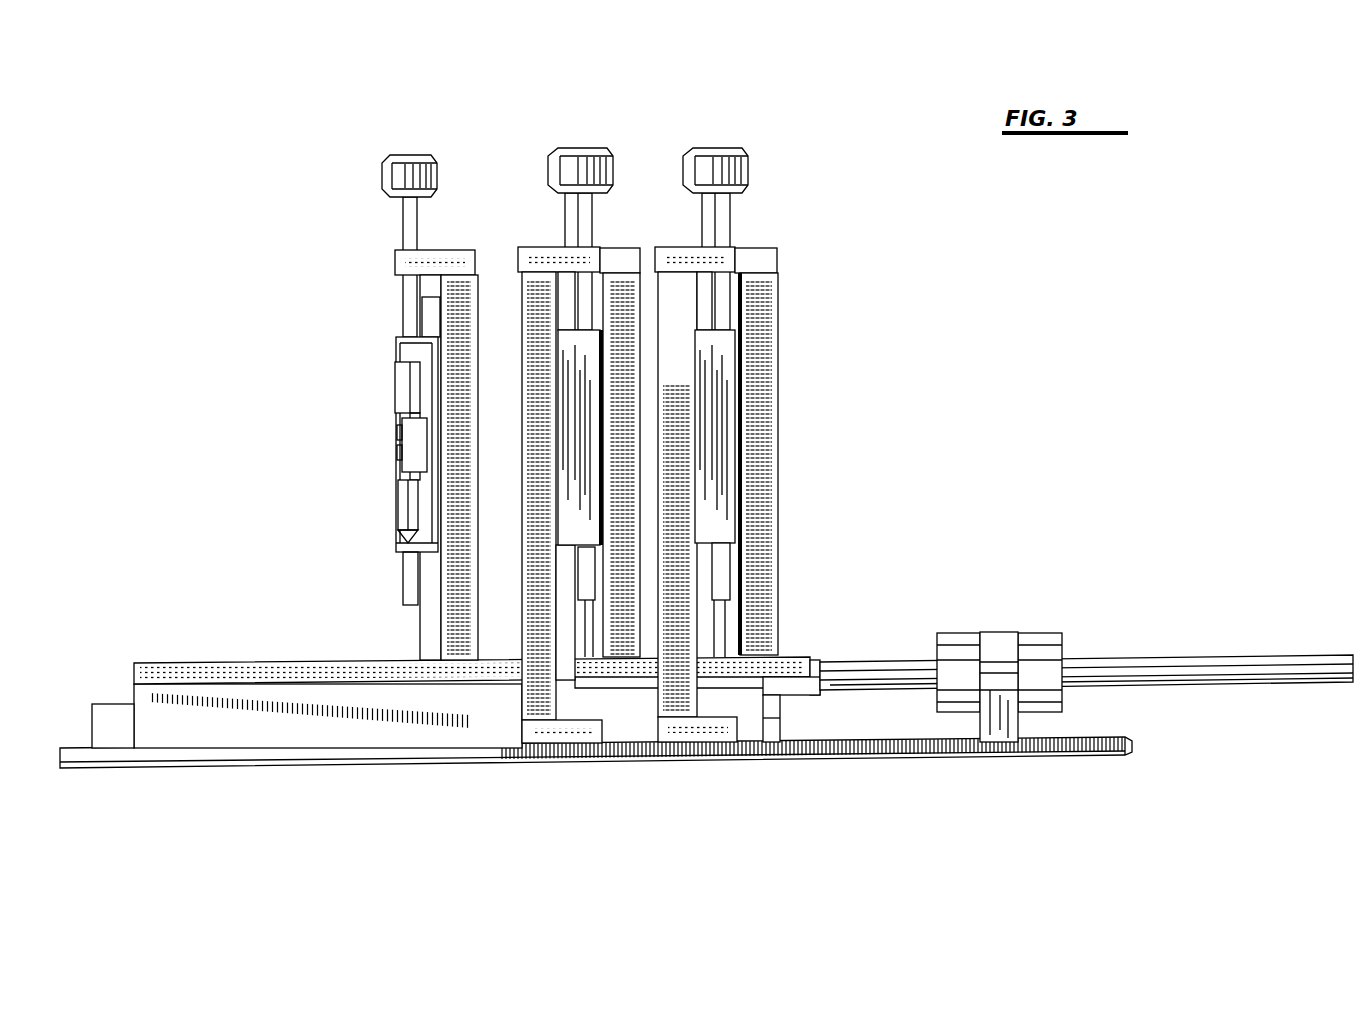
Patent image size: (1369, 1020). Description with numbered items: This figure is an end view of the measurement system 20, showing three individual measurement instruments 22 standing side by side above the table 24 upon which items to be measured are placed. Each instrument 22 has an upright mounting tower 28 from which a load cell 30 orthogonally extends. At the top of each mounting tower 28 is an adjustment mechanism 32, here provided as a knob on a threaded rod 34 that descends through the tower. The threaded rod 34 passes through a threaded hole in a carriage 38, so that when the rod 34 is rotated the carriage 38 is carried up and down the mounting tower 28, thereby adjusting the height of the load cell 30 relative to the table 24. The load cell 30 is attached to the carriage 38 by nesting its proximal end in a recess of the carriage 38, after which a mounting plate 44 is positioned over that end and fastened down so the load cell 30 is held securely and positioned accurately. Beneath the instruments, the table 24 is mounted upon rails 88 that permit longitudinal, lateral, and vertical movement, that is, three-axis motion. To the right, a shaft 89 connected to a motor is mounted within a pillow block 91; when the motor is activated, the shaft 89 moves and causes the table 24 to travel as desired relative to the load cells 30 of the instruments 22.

The measurement system 20 is at (950, 258).
The measurement instrument 22 is at (453, 240).
The table 24 is at (220, 665).
The mounting tower 28 is at (455, 322).
The load cell 30 is at (420, 393).
The adjustment mechanism 32 is at (410, 155).
The threaded rod 34 is at (403, 214).
The carriage 38 is at (404, 545).
The mounting plate 44 is at (400, 467).
The rails 88 is at (327, 725).
The shaft 89 is at (1118, 660).
The pillow block 91 is at (1000, 640).